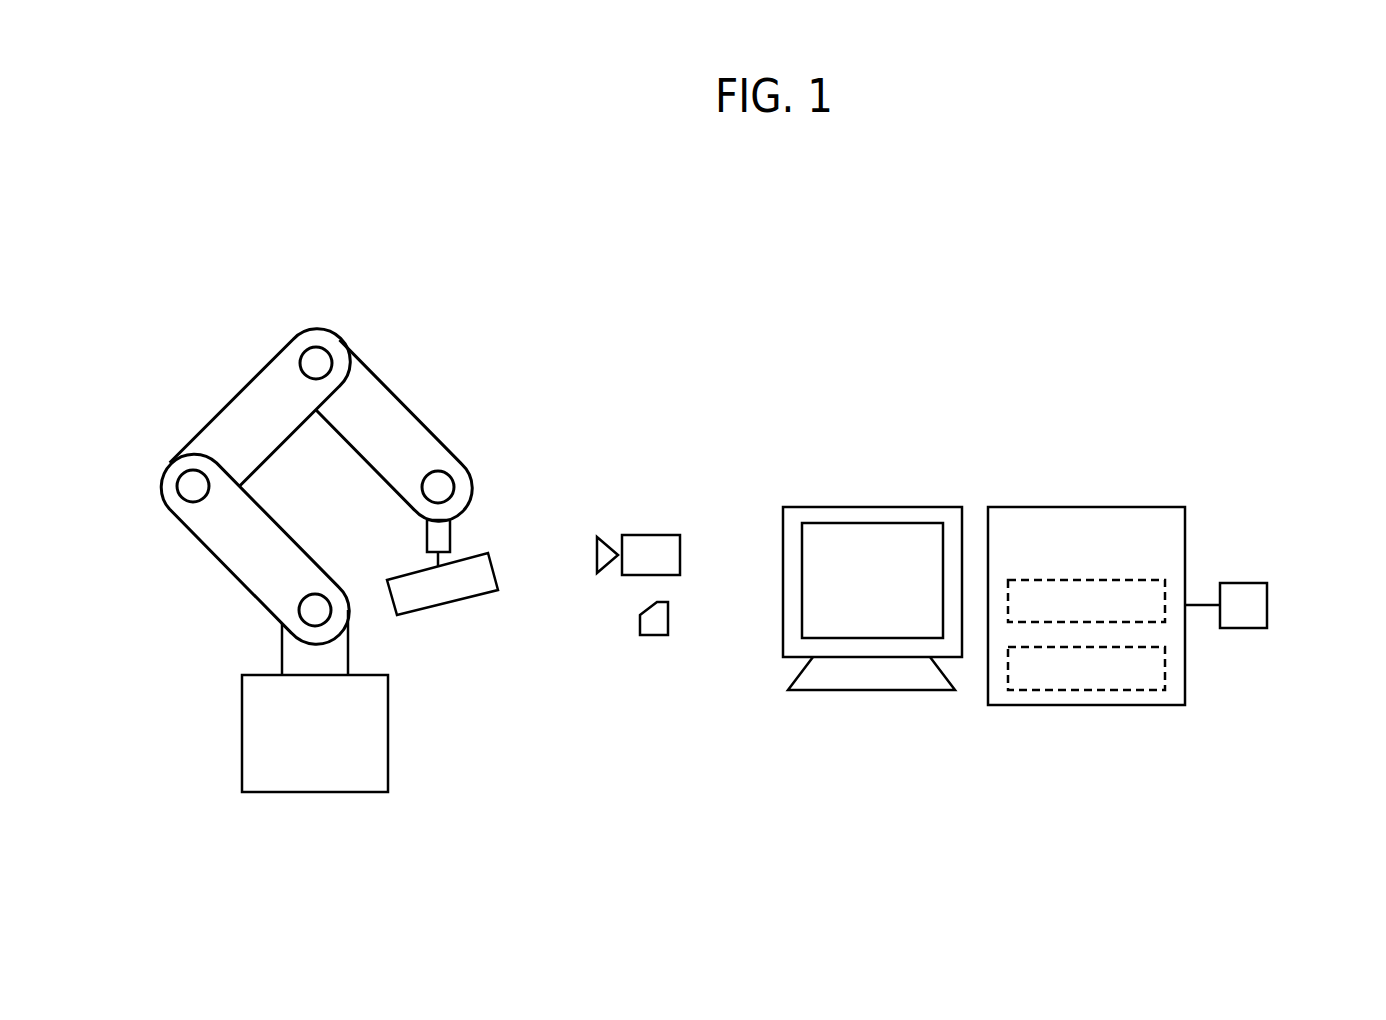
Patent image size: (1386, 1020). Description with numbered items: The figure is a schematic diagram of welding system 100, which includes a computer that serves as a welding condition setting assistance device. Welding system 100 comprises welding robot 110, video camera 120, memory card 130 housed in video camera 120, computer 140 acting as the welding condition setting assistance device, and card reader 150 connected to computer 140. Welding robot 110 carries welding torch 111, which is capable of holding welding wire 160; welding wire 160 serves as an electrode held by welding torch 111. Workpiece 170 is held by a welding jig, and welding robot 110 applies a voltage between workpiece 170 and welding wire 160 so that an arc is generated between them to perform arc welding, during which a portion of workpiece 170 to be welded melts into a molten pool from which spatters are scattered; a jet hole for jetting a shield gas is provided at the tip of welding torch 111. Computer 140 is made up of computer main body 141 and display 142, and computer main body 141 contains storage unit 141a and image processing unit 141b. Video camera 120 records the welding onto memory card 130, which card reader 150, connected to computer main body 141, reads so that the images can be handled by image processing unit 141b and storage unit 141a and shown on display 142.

The welding system 100 is at (607, 330).
The welding robot 110 is at (403, 422).
The welding torch 111 is at (445, 538).
The video camera 120 is at (653, 532).
The memory card 130 is at (653, 637).
The computer 140 is at (1128, 423).
The computer main body 141 is at (1082, 505).
The storage unit 141a is at (1128, 623).
The image processing unit 141b is at (1128, 690).
The display 142 is at (895, 505).
The card reader 150 is at (1268, 603).
The welding wire 160 is at (437, 562).
The workpiece 170 is at (448, 587).